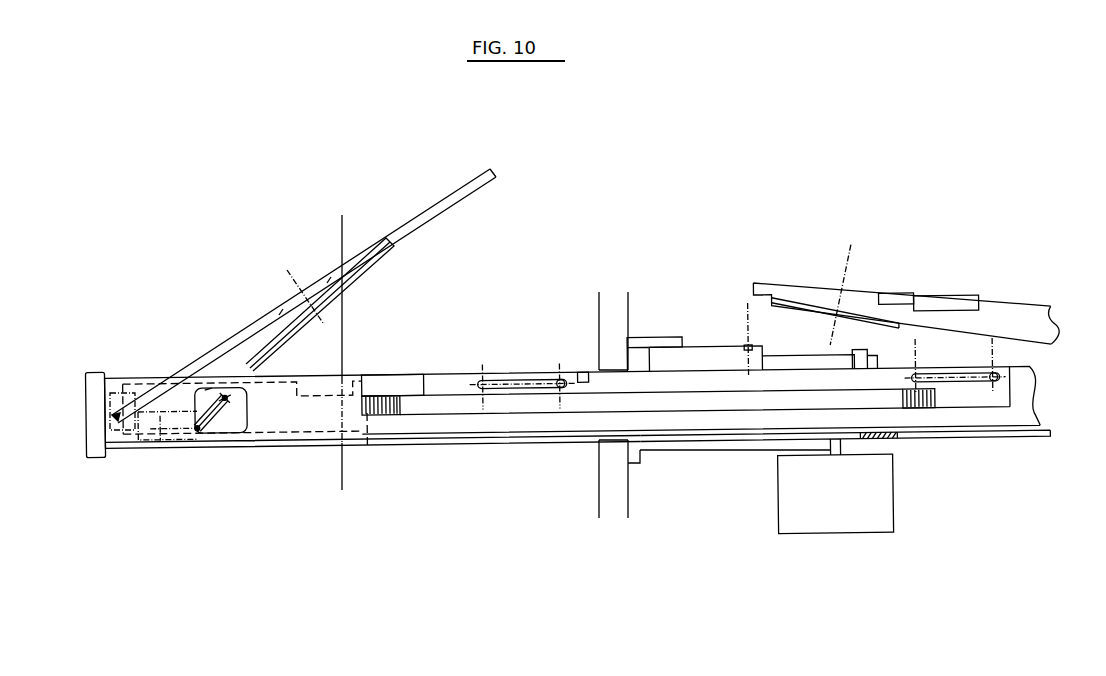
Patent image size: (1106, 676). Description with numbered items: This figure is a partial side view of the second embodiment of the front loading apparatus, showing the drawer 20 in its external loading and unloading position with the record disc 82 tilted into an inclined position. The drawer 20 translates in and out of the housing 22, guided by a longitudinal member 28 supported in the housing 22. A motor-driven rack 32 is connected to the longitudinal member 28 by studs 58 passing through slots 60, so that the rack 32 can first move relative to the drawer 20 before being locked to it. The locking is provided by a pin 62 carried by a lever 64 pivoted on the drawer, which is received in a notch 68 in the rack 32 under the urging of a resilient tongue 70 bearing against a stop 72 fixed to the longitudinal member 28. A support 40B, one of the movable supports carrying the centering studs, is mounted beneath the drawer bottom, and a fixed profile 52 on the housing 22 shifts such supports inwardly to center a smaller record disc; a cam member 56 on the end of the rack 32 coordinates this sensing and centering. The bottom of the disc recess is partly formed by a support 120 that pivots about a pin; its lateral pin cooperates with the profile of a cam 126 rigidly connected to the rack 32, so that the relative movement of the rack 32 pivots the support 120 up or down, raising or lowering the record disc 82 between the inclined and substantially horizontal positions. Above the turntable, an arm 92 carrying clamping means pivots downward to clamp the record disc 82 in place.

The drawer 20 is at (97, 433).
The housing 22 is at (653, 447).
The longitudinal member 28 is at (1013, 418).
The rack 32 is at (960, 397).
The support 40B is at (640, 340).
The fixed profile 52 is at (897, 440).
The cam member 56 is at (315, 438).
The stud 58 is at (560, 377).
The slot 60 is at (497, 380).
The pin 62 is at (750, 347).
The lever 64 is at (695, 357).
The notch 68 is at (583, 372).
The resilient tongue 70 is at (790, 367).
The stop 72 is at (862, 358).
The record disc 82 is at (495, 173).
The arm 92 is at (953, 327).
The support 120 is at (348, 288).
The cam 126 is at (245, 418).